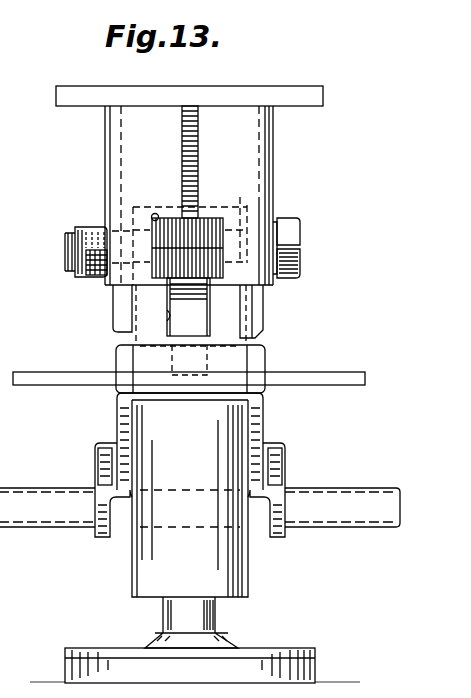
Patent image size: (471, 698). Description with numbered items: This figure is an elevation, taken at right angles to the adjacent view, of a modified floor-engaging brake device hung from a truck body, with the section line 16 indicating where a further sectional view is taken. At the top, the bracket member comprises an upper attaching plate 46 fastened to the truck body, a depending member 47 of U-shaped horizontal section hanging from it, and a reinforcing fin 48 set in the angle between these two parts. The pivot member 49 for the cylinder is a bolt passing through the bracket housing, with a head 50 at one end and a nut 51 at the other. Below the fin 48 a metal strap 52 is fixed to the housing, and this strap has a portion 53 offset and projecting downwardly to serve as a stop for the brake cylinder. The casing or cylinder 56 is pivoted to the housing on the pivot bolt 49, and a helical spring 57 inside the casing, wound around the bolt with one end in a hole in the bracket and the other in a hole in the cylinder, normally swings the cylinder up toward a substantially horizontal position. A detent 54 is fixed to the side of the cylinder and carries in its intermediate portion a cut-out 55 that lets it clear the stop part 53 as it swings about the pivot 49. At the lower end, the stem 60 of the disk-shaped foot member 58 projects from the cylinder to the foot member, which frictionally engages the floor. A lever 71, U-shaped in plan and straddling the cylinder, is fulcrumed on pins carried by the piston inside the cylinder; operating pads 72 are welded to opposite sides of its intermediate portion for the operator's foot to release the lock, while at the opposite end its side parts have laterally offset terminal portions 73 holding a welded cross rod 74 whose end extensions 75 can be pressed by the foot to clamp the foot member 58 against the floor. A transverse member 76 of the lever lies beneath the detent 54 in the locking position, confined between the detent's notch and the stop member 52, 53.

The section line 16 is at (273, 70).
The upper attaching plate 46 is at (73, 95).
The depending member 47 is at (258, 148).
The reinforcing fin 48 is at (188, 151).
The pivot member 49 is at (182, 230).
The head 50 is at (292, 231).
The nut 51 is at (95, 230).
The metal strap 52 is at (190, 281).
The offset portion 53 is at (197, 328).
The detent 54 is at (145, 315).
The cut-out 55 is at (172, 311).
The cylinder 56 is at (228, 439).
The helical spring 57 is at (166, 210).
The foot member 58 is at (98, 658).
The stem 60 is at (199, 617).
The lever 71 is at (118, 428).
The operating pads 72 is at (55, 377).
The laterally offset terminal portions 73 is at (100, 468).
The rod 74 is at (122, 530).
The end extensions 75 is at (44, 512).
The transverse member 76 is at (163, 388).